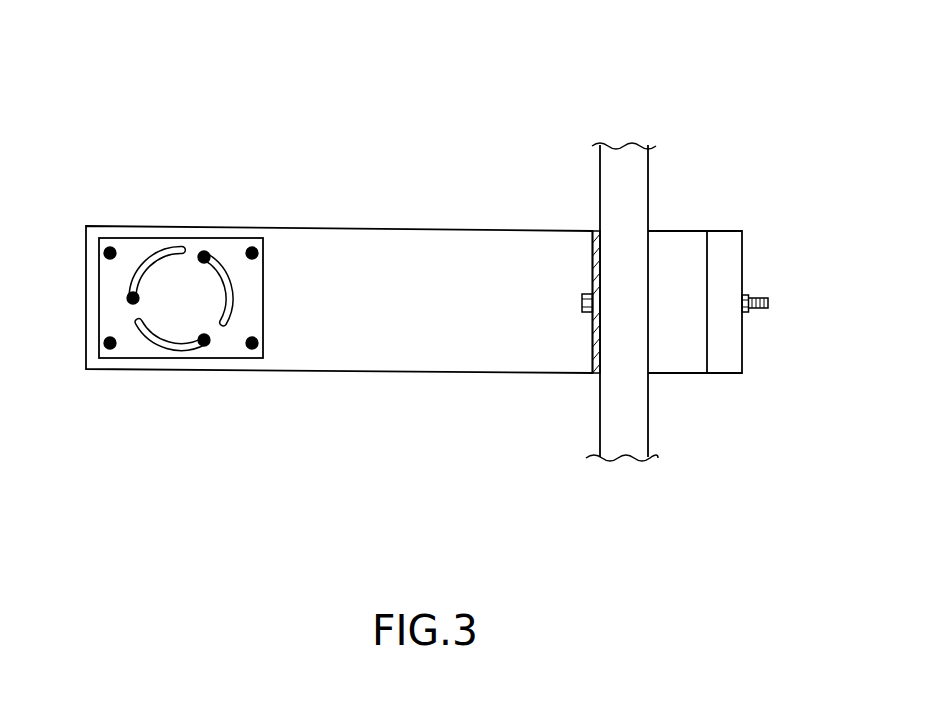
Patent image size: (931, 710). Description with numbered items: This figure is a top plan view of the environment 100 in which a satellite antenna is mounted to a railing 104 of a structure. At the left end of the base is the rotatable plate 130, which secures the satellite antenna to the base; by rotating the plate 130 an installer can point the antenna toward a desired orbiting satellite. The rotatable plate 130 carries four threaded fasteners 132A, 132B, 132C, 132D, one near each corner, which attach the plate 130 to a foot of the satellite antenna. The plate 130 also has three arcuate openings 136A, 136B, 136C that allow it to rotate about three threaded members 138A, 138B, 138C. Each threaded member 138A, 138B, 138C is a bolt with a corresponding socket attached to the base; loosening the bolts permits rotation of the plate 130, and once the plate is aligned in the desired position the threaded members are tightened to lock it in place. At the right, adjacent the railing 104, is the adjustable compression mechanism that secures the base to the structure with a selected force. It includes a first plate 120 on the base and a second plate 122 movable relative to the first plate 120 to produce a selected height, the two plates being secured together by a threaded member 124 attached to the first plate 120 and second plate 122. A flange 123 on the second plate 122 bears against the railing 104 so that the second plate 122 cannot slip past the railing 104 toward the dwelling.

The environment 100 is at (688, 102).
The railing 104 is at (648, 165).
The first plate 120 is at (733, 248).
The second plate 122 is at (682, 240).
The flange 123 is at (597, 230).
The threaded member 124 is at (768, 303).
The rotatable plate 130 is at (130, 236).
The threaded fastener 132A is at (104, 251).
The threaded fastener 132B is at (104, 343).
The threaded fastener 132C is at (253, 248).
The threaded fastener 132D is at (258, 343).
The opening 136A is at (231, 291).
The opening 136B is at (136, 288).
The opening 136C is at (157, 345).
The threaded member 138A is at (204, 251).
The threaded member 138B is at (206, 347).
The threaded member 138C is at (128, 300).